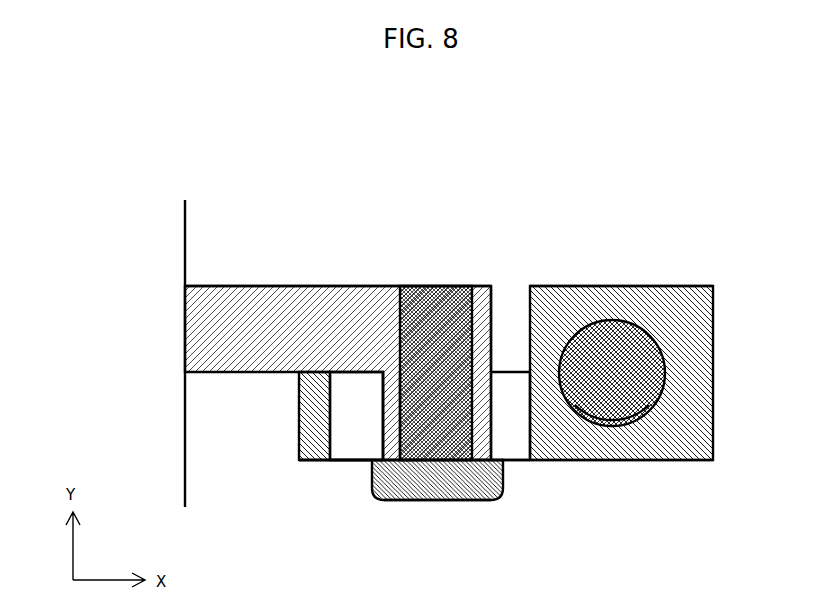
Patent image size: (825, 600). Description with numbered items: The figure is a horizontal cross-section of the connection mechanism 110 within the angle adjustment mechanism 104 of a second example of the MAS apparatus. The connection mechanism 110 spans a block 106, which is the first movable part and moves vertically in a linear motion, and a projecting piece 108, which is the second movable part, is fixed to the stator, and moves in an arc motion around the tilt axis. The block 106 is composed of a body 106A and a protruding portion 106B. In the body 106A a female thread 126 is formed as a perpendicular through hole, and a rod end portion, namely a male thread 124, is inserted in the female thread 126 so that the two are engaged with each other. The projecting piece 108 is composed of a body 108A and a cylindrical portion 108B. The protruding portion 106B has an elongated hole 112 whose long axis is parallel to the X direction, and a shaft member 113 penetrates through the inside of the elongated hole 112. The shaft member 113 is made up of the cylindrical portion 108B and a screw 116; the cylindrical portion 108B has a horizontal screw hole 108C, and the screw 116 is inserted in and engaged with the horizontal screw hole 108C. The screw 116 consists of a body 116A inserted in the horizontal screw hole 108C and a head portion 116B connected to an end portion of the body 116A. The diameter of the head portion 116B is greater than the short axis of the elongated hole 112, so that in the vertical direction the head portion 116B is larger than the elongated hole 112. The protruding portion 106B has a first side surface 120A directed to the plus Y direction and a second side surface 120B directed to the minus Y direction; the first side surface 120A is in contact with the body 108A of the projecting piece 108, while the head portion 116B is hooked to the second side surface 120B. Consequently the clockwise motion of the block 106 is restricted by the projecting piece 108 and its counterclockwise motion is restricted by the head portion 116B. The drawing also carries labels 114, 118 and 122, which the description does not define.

The angle adjustment mechanism 104 is at (503, 193).
The block 106 is at (608, 285).
The body 106A is at (685, 285).
The protruding portion 106B is at (298, 430).
The projecting piece 108 is at (287, 285).
The body 108A is at (253, 285).
The cylindrical portion 108B is at (492, 425).
The horizontal screw hole 108C is at (405, 377).
The connection mechanism 110 is at (508, 542).
The elongated hole 112 is at (332, 423).
The shaft member 113 is at (453, 512).
The opening 114 is at (502, 393).
The screw 116 is at (435, 503).
The body 116A is at (397, 410).
The head portion 116B is at (408, 502).
The cavity 118 is at (358, 398).
The first side surface 120A is at (507, 370).
The second side surface 120B is at (357, 465).
The circular conductor 122 is at (667, 352).
The male thread 124 is at (603, 428).
The female thread 126 is at (635, 385).